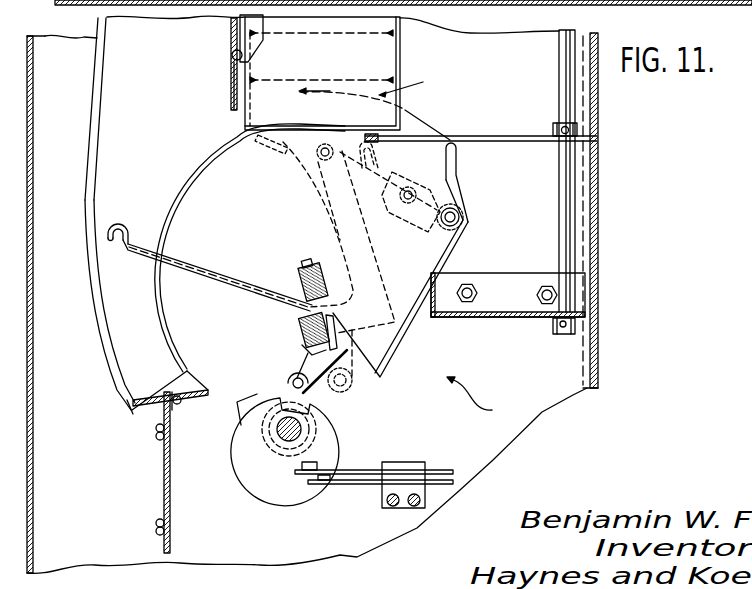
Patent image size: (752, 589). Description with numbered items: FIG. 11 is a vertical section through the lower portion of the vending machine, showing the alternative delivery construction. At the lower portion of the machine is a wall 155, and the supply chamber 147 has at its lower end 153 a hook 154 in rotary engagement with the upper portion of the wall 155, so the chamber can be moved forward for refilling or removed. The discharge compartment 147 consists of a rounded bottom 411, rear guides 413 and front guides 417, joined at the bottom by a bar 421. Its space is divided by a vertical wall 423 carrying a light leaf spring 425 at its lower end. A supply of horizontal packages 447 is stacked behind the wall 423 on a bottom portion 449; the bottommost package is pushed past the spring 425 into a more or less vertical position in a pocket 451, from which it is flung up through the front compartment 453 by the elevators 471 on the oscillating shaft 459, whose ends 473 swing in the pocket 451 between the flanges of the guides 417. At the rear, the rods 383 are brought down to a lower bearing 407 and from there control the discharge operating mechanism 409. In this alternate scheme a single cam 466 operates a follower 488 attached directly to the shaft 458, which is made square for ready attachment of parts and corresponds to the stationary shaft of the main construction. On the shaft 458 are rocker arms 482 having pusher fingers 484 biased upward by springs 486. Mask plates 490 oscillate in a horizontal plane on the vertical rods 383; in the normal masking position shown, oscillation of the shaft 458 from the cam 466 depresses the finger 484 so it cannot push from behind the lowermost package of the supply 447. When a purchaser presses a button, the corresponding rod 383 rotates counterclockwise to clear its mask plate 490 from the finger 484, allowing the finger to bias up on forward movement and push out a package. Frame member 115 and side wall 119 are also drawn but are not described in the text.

The frame member 115 is at (598, 198).
The side wall 119 is at (33, 419).
The supply chamber 147 is at (357, 73).
The lower end 153 is at (132, 412).
The hook 154 is at (174, 408).
The wall 155 is at (165, 481).
The rod 383 is at (562, 62).
The lower bearing 407 is at (486, 308).
The discharge operating mechanism 409 is at (488, 398).
The rounded bottom 411 is at (319, 267).
The rear guide 413 is at (402, 51).
The front guide 417 is at (93, 108).
The bar 421 is at (150, 412).
The vertical wall 423 is at (232, 35).
The light leaf spring 425 is at (232, 88).
The horizontal packages 447 is at (377, 82).
The bottom portion 449 is at (352, 126).
The pocket 451 is at (98, 308).
The front compartment 453 is at (89, 214).
The shaft 458 is at (300, 330).
The shaft 459 is at (300, 275).
The cam 466 is at (262, 491).
The elevator 471 is at (206, 251).
The end of elevator 473 is at (118, 222).
The rocker arm 482 is at (332, 210).
The pusher finger 484 is at (250, 134).
The spring 486 is at (396, 156).
The follower 488 is at (292, 383).
The mask plate 490 is at (475, 137).